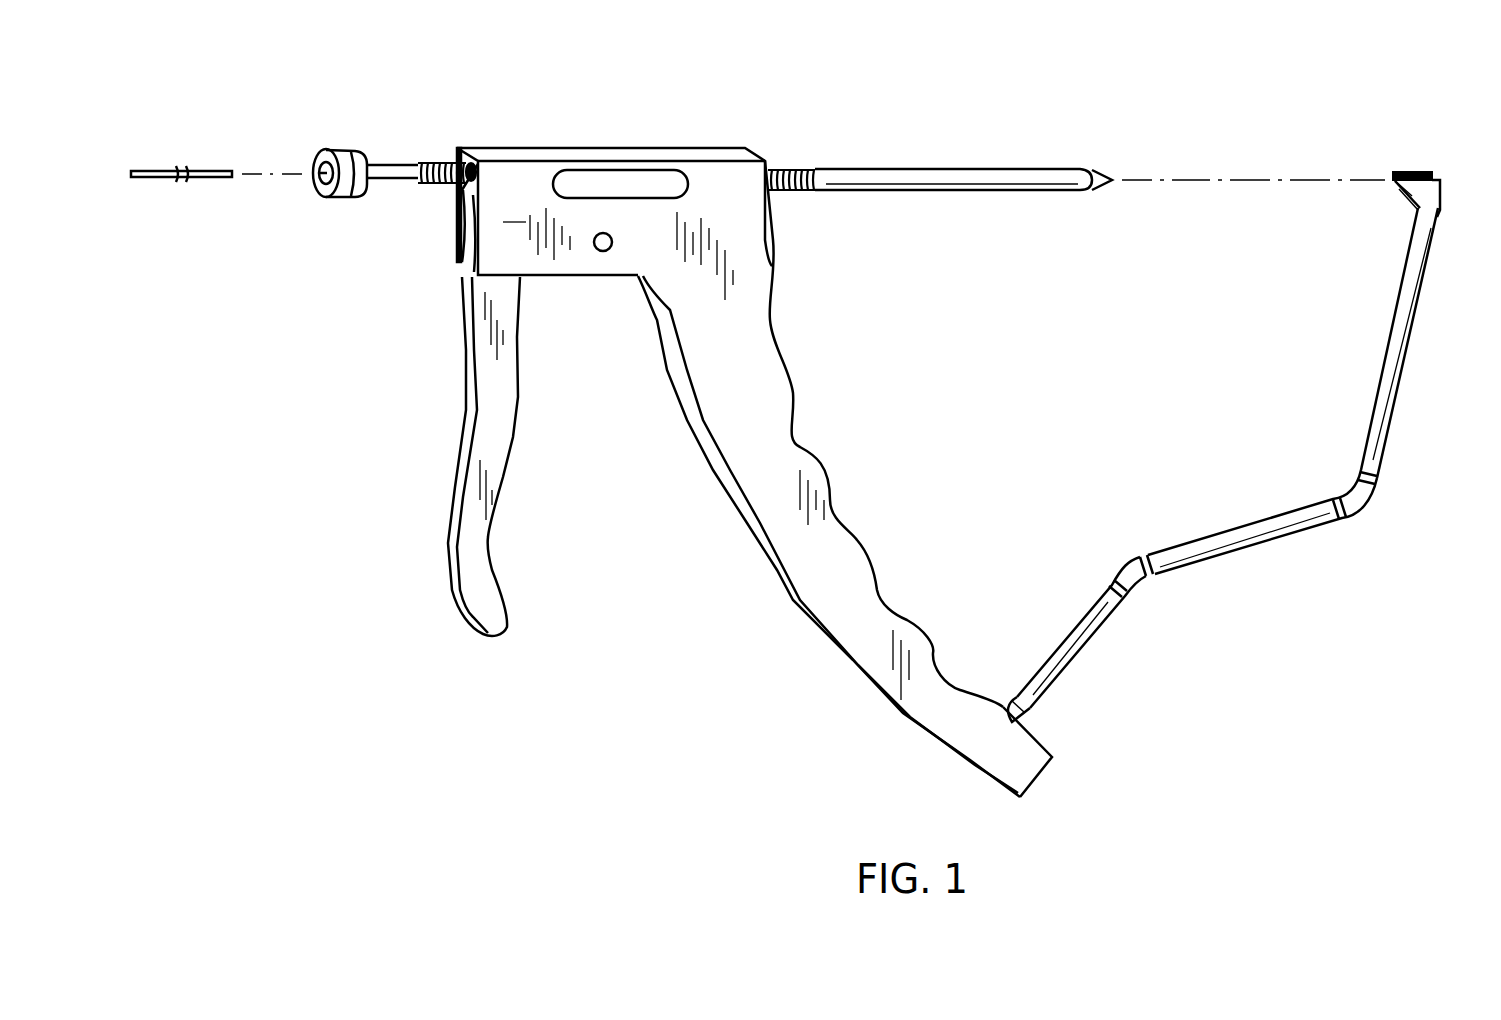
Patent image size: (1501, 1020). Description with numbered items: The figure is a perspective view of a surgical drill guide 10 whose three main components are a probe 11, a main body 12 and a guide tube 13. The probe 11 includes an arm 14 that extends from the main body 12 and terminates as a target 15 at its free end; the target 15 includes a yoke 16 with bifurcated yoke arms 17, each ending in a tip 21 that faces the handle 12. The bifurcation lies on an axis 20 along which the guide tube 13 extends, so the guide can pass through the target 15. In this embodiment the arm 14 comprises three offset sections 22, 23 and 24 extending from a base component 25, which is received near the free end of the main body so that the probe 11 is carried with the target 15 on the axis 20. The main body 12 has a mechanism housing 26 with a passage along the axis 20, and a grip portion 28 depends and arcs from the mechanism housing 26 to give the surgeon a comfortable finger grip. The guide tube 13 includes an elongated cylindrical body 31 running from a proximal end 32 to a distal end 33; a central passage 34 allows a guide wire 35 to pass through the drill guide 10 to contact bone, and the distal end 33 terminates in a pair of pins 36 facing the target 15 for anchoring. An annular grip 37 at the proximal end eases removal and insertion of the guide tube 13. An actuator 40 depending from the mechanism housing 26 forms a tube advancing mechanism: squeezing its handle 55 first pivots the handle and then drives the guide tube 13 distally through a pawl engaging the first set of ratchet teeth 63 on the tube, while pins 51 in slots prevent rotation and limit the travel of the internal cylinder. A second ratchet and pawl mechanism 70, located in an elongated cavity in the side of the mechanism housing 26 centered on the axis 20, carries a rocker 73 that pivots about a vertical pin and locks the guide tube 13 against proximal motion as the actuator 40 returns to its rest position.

The surgical drill guide 10 is at (960, 148).
The probe 11 is at (1394, 356).
The main body 12 is at (787, 358).
The guide tube 13 is at (892, 170).
The arm 14 is at (1268, 518).
The target 15 is at (1440, 207).
The yoke 16 is at (1414, 216).
The yoke arms 17 is at (1404, 192).
The axis 20 is at (283, 171).
The tip 21 is at (1395, 177).
The first offset section 22 is at (1070, 657).
The second offset section 23 is at (1238, 541).
The third offset section 24 is at (1403, 376).
The base component 25 is at (1030, 719).
The mechanism housing 26 is at (614, 224).
The grip portion 28 is at (792, 450).
The cylindrical body 31 is at (920, 186).
The proximal end 32 is at (366, 162).
The distal end 33 is at (1082, 171).
The central passage 34 is at (319, 183).
The guide wire 35 is at (210, 168).
The pins 36 is at (710, 154).
The annular grip 37 is at (352, 158).
The actuator 40 is at (460, 270).
The pins 51 is at (609, 236).
The actuator handle 55 is at (508, 430).
The first set of ratchet teeth 63 is at (795, 172).
The second ratchet and pawl mechanism 70 is at (598, 152).
The rocker 73 is at (564, 182).